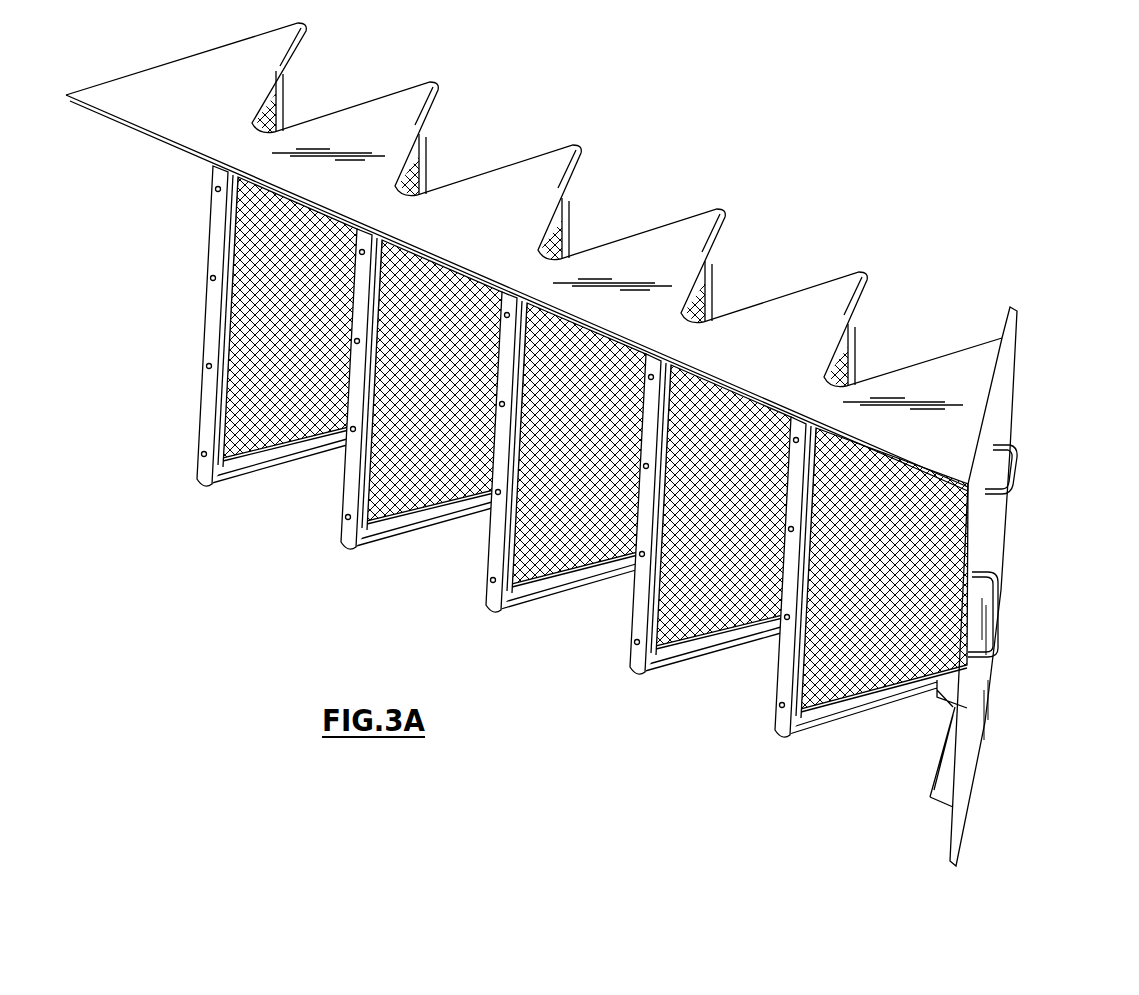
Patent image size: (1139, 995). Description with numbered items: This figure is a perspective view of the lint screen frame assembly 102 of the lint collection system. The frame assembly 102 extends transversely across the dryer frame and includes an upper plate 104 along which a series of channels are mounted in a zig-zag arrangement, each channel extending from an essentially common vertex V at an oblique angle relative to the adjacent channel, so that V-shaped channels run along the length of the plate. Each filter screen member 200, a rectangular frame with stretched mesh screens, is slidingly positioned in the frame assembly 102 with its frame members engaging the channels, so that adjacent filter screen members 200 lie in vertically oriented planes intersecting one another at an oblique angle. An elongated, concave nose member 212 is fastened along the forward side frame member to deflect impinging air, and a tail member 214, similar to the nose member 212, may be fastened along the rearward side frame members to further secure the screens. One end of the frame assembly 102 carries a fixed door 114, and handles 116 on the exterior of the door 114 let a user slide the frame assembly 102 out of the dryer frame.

The lint screen frame assembly 102 is at (812, 198).
The upper plate 104 is at (831, 305).
The tail member 214 is at (862, 347).
The door 114 is at (992, 543).
The handles 116 is at (1016, 480).
The filter screen member 200 is at (420, 490).
The nose member 212 is at (778, 666).
The vertex V is at (822, 727).